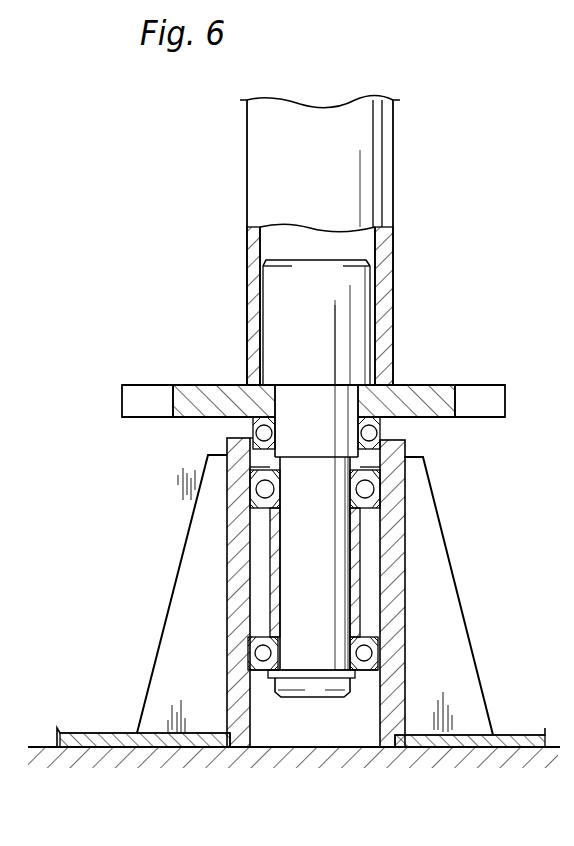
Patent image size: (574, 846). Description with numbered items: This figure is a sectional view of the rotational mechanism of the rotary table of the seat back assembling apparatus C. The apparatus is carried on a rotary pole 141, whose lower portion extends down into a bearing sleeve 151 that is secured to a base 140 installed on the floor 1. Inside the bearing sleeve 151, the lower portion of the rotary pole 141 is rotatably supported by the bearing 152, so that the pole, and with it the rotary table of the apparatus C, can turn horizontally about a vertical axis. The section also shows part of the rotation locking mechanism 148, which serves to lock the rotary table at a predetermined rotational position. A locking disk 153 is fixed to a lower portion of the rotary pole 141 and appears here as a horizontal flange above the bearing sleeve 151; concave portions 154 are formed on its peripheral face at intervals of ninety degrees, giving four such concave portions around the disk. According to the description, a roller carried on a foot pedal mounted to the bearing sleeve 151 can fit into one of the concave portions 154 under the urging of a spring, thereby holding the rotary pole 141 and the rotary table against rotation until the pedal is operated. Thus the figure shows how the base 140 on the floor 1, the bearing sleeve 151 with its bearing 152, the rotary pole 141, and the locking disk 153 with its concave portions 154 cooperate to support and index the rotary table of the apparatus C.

The seat back assembling apparatus C is at (395, 193).
The rotary pole 141 is at (393, 279).
The rotation locking mechanism 148 is at (405, 380).
The locking disk 153 is at (200, 405).
The concave portions 154 is at (143, 405).
The bearing 152 is at (380, 432).
The bearing sleeve 151 is at (395, 585).
The base 140 is at (475, 745).
The floor 1 is at (37, 747).